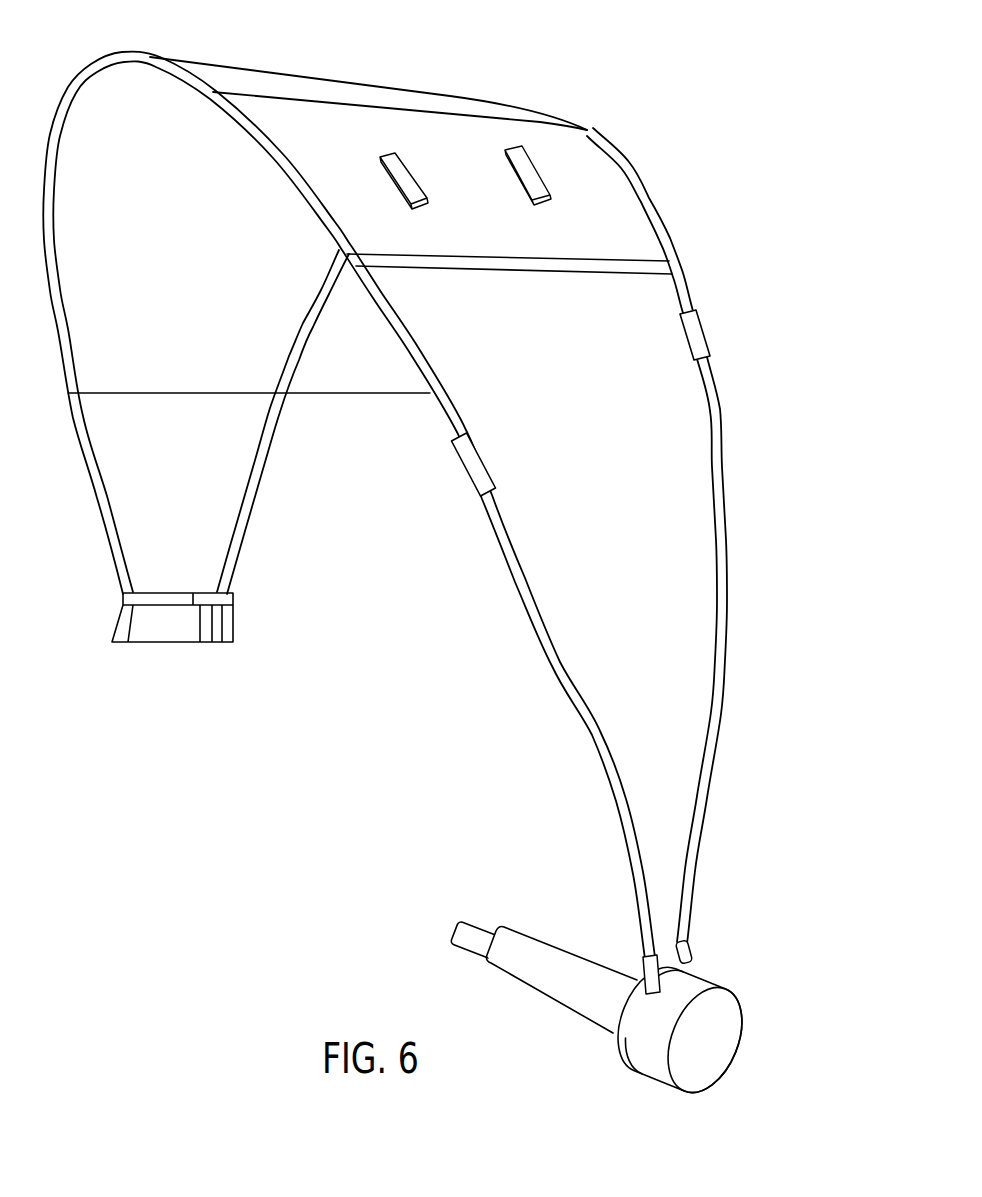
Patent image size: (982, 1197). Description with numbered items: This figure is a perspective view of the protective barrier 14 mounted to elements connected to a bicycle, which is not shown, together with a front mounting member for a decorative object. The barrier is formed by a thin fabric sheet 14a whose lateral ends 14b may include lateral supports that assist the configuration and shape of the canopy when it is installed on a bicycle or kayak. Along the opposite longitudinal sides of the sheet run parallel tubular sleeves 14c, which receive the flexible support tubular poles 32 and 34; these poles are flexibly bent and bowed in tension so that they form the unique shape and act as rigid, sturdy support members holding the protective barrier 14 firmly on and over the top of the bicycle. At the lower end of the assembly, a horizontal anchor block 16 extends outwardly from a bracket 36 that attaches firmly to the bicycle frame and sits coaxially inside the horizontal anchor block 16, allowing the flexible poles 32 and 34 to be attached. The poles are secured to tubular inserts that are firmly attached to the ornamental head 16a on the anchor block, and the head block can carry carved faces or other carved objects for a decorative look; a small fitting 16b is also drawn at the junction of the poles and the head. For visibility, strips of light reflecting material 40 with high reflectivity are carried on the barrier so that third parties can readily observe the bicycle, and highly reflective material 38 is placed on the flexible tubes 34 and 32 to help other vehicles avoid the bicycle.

The protective barrier 14 is at (477, 80).
The thin fabric sheet 14a is at (90, 328).
The lateral ends 14b is at (590, 128).
The parallel tubular sleeves 14c is at (540, 274).
The horizontal anchor block 16 is at (540, 938).
The ornamental head 16a is at (722, 1030).
The clasp 16b is at (690, 952).
The flexible support tubular pole 32 is at (255, 485).
The flexible support tubular pole 34 is at (110, 537).
The bracket 36 is at (460, 925).
The highly reflective material 38 is at (475, 463).
The strips of light reflecting material 40 is at (407, 180).